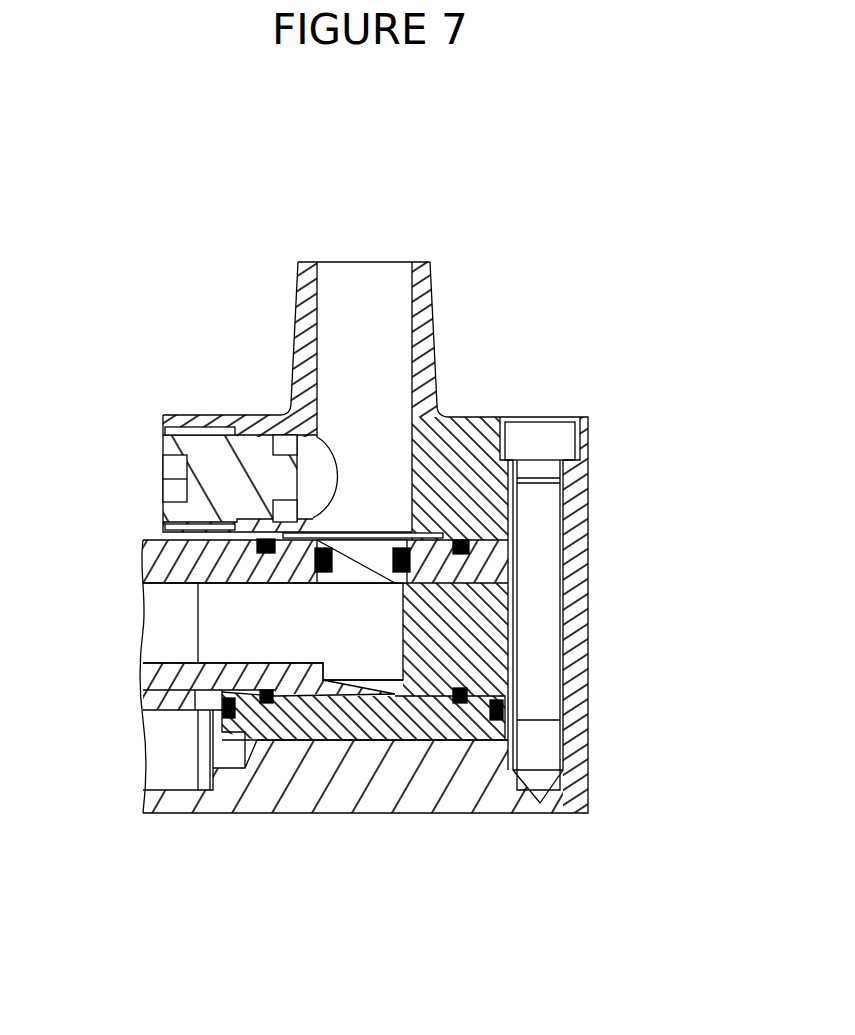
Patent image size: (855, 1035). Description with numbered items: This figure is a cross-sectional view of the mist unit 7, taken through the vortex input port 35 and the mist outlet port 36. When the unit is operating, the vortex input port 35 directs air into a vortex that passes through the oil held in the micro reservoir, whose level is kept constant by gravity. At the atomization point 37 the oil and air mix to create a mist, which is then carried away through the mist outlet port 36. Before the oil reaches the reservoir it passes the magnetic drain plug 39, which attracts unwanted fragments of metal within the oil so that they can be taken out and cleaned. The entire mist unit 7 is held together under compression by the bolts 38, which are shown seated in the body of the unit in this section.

The mist unit 7 is at (655, 548).
The vortex input port 35 is at (350, 716).
The mist outlet port 36 is at (128, 619).
The atomization point 37 is at (350, 695).
The bolts 38 is at (545, 402).
The magnetic drain plug 39 is at (152, 433).